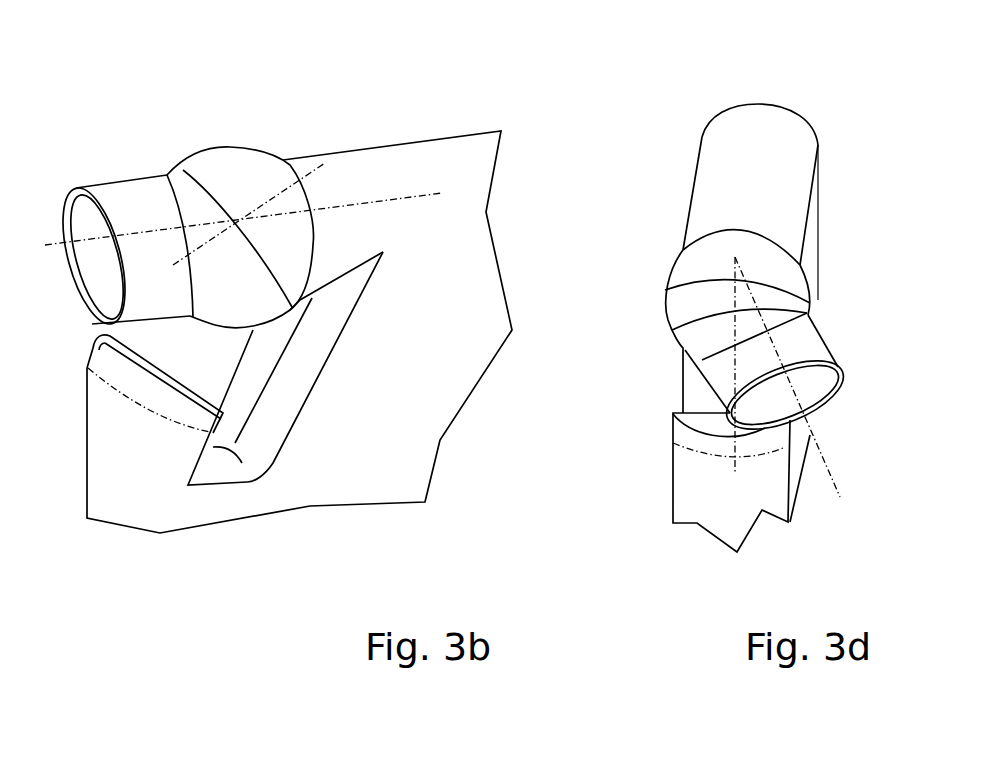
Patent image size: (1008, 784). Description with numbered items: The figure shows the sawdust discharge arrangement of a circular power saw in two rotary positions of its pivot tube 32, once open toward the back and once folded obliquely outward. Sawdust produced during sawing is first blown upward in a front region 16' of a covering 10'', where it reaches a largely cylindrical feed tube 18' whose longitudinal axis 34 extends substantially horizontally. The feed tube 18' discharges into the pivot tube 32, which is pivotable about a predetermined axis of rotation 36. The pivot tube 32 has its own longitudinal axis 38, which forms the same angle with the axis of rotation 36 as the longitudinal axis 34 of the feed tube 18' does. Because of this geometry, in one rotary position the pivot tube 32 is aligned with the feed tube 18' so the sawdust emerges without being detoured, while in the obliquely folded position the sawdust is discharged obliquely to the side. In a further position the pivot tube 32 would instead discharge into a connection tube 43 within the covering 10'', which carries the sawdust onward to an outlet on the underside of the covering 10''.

In FIG. 3B, the pivot tube 32 is at (140, 182).
In FIG. 3B, the axis of rotation 36 is at (268, 191).
In FIG. 3D, the axis of rotation 36 is at (672, 325).
In FIG. 3B, the longitudinal axis 34 is at (370, 199).
In FIG. 3B, the feed tube 18' is at (299, 273).
In FIG. 3B, the front region 16' is at (550, 301).
In FIG. 3B, the connection tube 43 is at (135, 477).
In FIG. 3D, the connection tube 43 is at (697, 490).
In FIG. 3B, the covering 10'' is at (388, 531).
In FIG. 3D, the longitudinal axis 38 is at (830, 483).